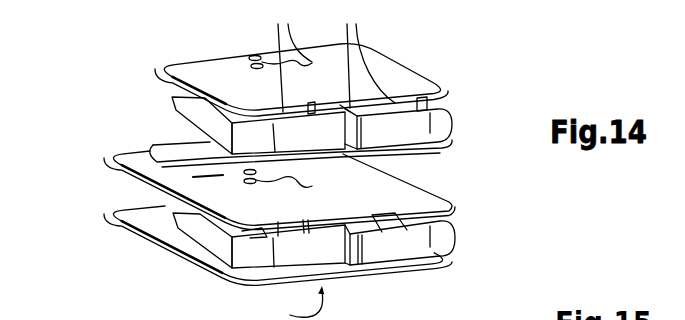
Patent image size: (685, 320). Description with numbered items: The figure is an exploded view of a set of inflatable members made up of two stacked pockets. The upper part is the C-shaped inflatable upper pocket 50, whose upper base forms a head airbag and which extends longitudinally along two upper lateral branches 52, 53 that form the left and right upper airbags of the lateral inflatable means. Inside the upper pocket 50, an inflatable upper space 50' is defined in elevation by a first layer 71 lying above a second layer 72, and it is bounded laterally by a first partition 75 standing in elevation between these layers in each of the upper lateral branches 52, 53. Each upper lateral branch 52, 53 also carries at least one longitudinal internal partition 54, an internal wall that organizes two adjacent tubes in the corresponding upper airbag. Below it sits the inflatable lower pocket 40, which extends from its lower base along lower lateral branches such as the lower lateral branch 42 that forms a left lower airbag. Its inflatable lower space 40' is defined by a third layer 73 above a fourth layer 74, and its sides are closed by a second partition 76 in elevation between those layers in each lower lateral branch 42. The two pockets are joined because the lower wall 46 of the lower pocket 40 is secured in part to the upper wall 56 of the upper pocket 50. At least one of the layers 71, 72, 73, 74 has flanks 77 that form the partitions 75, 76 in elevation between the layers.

The inflatable upper pocket 50 is at (257, 101).
The inflatable upper space 50' is at (289, 65).
The upper lateral branch 52 is at (374, 68).
The upper lateral branch 53 is at (257, 56).
The longitudinal internal partition 54 is at (264, 88).
The first layer 71 is at (410, 80).
The second layer 72 is at (410, 150).
The flanks 77 is at (428, 110).
The inflatable lower pocket 40 is at (125, 175).
The inflatable lower space 40' is at (255, 207).
The lower wall 46 is at (112, 150).
The third layer 73 is at (413, 197).
The upper wall 56 is at (164, 134).
The first partition 75 is at (257, 132).
The fourth layer 74 is at (430, 260).
The second partition 76 is at (443, 233).
The lower lateral branch 42 is at (408, 289).